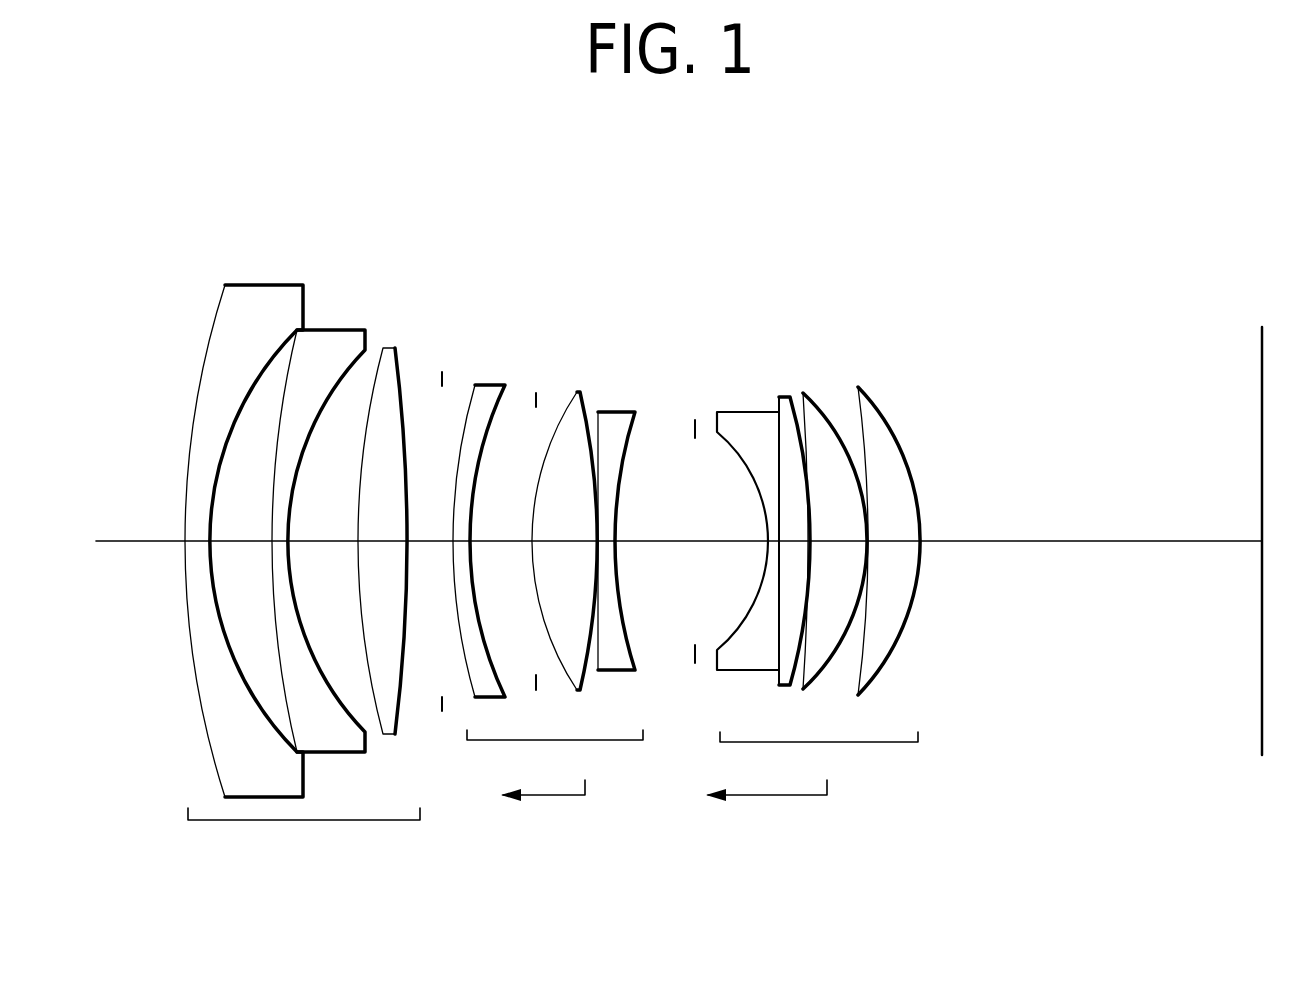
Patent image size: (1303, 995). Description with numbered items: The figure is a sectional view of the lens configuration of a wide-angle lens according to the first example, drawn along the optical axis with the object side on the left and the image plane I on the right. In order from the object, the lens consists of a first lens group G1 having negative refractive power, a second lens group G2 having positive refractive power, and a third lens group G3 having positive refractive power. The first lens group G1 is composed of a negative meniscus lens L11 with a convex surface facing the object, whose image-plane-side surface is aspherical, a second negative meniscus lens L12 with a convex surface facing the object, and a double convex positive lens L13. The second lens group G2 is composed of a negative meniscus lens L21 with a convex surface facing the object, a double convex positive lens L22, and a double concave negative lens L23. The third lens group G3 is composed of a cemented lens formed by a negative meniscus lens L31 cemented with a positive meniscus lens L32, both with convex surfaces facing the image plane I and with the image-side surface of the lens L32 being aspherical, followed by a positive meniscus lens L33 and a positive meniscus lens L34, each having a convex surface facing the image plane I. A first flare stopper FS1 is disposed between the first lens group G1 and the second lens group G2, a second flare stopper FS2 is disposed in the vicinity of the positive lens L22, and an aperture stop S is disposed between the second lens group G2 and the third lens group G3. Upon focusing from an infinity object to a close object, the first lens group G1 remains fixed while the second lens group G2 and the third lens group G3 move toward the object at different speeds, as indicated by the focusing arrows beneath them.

The negative meniscus lens L11 is at (262, 285).
The negative meniscus lens L12 is at (323, 330).
The double convex positive lens L13 is at (383, 348).
The first flare stopper FS1 is at (442, 372).
The second flare stopper FS2 is at (536, 393).
The negative meniscus lens L21 is at (487, 385).
The double convex positive lens L22 is at (577, 392).
The double concave negative lens L23 is at (625, 412).
The aperture stop S is at (695, 420).
The negative meniscus lens L31 is at (733, 412).
The positive meniscus lens L32 is at (780, 397).
The positive meniscus lens L33 is at (823, 412).
The positive meniscus lens L34 is at (860, 387).
The image plane I is at (1261, 387).
The first lens group G1 is at (304, 833).
The second lens group G2 is at (554, 785).
The third lens group G3 is at (812, 786).